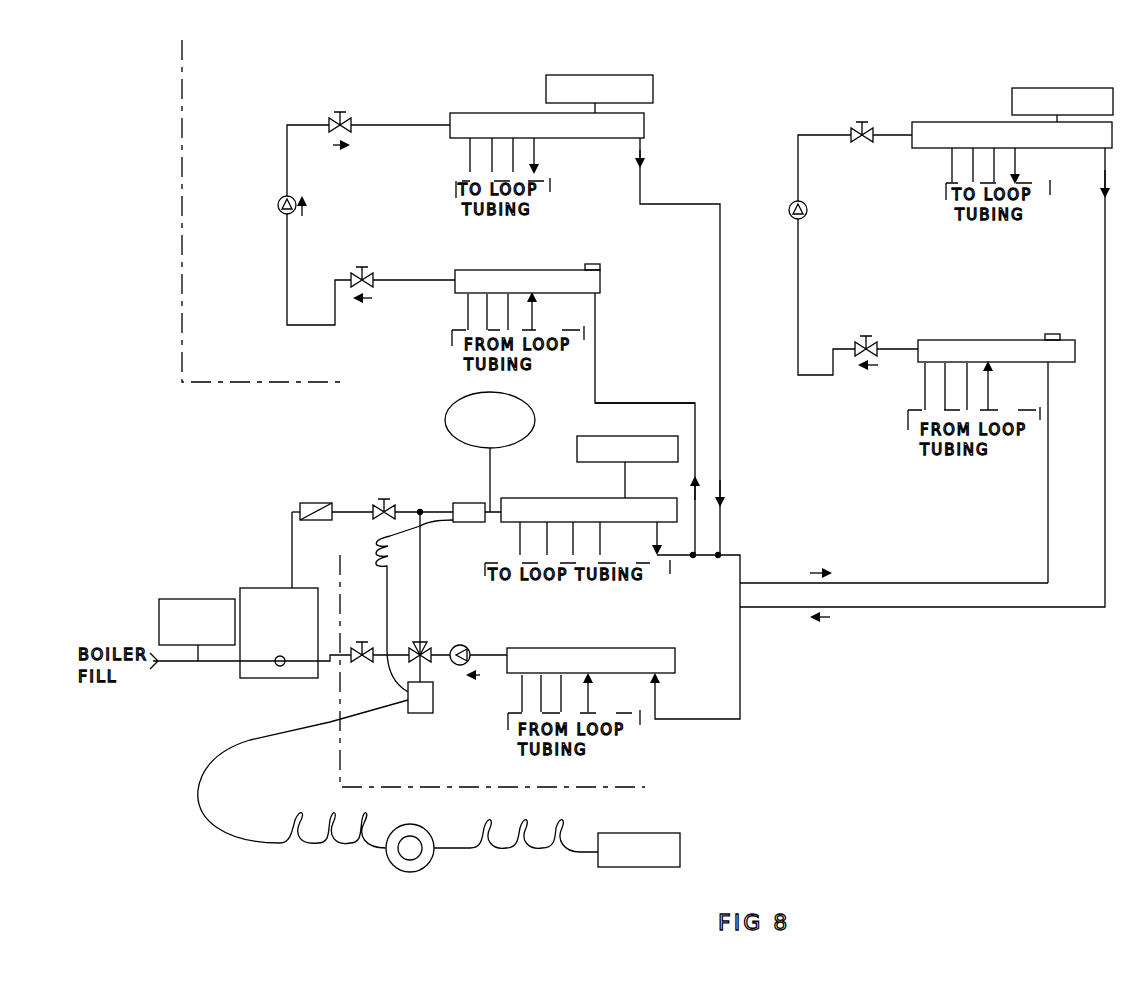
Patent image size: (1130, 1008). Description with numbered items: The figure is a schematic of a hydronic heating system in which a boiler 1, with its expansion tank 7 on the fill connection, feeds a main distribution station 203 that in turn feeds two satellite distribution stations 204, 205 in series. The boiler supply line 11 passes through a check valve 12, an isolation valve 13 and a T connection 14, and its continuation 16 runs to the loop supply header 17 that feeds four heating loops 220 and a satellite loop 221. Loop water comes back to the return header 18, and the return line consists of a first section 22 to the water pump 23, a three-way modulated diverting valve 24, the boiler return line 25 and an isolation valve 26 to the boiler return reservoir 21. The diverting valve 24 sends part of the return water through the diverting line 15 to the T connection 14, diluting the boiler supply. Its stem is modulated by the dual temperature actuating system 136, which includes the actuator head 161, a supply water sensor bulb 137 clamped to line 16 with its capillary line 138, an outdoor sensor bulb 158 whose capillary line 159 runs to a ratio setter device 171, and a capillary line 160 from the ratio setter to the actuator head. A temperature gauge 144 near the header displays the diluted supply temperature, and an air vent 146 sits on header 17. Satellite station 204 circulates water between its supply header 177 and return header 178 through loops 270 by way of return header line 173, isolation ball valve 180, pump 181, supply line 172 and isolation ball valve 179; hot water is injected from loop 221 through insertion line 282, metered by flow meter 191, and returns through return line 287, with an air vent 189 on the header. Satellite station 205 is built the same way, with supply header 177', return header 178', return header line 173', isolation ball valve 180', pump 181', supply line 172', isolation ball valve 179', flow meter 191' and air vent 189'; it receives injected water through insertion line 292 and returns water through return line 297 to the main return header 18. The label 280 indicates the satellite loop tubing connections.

The boiler 1 is at (262, 678).
The expansion tank 7 is at (166, 662).
The boiler supply line 11 is at (292, 512).
The check valve 12 is at (316, 503).
The isolation valve 13 is at (378, 499).
The T connection 14 is at (420, 512).
The diverting line 15 is at (420, 568).
The continuation of supply line 16 is at (436, 512).
The loop supply header 17 is at (580, 496).
The return header 18 is at (675, 655).
The boiler return reservoir 21 is at (283, 656).
The first section of return line 22 is at (495, 650).
The water pump 23 is at (420, 640).
The three-way modulated diverting valve 24 is at (425, 672).
The boiler return line 25 is at (325, 661).
The isolation valve 26 is at (362, 642).
The dual temperature actuating system 136 is at (178, 710).
The supply header water temperature thermal sensor bulb 137 is at (460, 503).
The capillary line 138 is at (372, 550).
The temperature gauge 144 is at (455, 405).
The air vent 146 is at (577, 441).
The outdoor ambient temperature thermal sensor bulb 158 is at (672, 833).
The capillary line 159 is at (490, 848).
The capillary line 160 is at (344, 852).
The dual temperature actuator head 161 is at (420, 713).
The ratio setter device 171 is at (410, 872).
The supply line 172 is at (273, 160).
The return header line 173 is at (509, 281).
The supply header 177 is at (547, 122).
The return header 178 is at (645, 416).
The isolation ball valve 179 is at (318, 113).
The isolation ball valve 180 is at (366, 260).
The pump 181 is at (269, 220).
The air vent 189 is at (598, 73).
The flow meter 191 is at (612, 253).
The main distribution station 203 is at (335, 760).
The satellite distribution station 204 is at (248, 110).
The satellite distribution station 205 is at (930, 88).
The heating loops 220 is at (703, 732).
The satellite loop 221 is at (740, 663).
The loops 270 is at (446, 342).
The return tubing connection 280 is at (938, 482).
The insertion line 282 is at (620, 403).
The return line 287 is at (690, 204).
The insertion line 292 is at (858, 583).
The return line 297 is at (922, 607).
The supply line 172' is at (794, 160).
The return header line 173' is at (978, 358).
The supply header 177' is at (1012, 131).
The return header 178' is at (1073, 469).
The isolation ball valve 179' is at (851, 111).
The isolation ball valve 180' is at (854, 327).
The pump 181' is at (772, 195).
The air vent 189' is at (1055, 82).
The flow meter 191' is at (1073, 321).